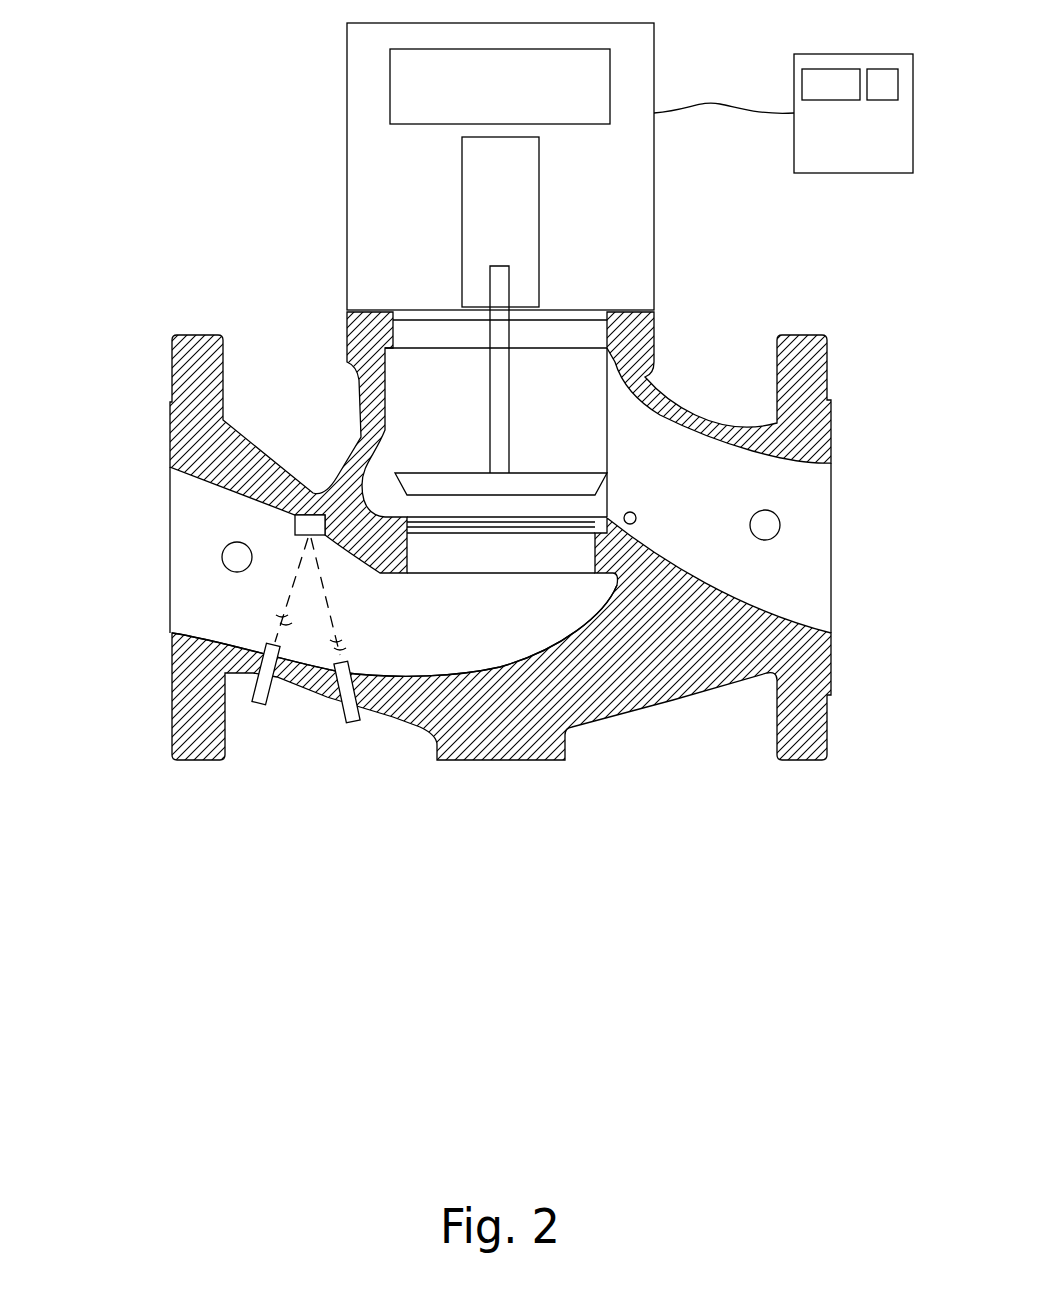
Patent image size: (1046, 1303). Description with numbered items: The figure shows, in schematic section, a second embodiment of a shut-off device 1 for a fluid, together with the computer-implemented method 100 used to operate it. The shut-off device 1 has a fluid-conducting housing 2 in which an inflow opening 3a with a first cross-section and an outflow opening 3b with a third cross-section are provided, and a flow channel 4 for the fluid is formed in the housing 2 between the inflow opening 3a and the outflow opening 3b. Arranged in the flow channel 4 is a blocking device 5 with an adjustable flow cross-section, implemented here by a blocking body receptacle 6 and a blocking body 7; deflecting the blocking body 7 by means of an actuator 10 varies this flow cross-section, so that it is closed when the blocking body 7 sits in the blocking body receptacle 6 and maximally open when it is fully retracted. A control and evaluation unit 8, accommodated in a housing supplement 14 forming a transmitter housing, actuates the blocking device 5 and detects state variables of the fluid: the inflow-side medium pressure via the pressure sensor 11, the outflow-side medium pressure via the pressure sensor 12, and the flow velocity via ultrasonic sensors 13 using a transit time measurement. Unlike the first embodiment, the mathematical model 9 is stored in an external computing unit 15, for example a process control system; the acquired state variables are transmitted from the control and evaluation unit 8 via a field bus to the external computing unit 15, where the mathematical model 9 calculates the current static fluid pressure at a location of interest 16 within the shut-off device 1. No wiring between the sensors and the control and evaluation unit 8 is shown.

The shut-off device 1 is at (125, 242).
The fluid-conducting housing 2 is at (733, 663).
The inflow opening 3a is at (168, 547).
The outflow opening 3b is at (832, 537).
The flow channel 4 is at (443, 592).
The blocking device 5 is at (575, 445).
The blocking body receptacle 6 is at (420, 560).
The blocking body 7 is at (573, 548).
The control and evaluation unit 8 is at (421, 97).
The mathematical model 9 is at (882, 85).
The actuator 10 is at (500, 222).
The pressure sensor on the inflow side 11 is at (233, 548).
The pressure sensor on the outflow side 12 is at (770, 520).
The ultrasonic sensors 13 is at (260, 704).
The housing supplement 14 is at (654, 63).
The external computing unit 15 is at (853, 113).
The location of interest 16 is at (636, 518).
The computer-implemented method 100 is at (831, 85).